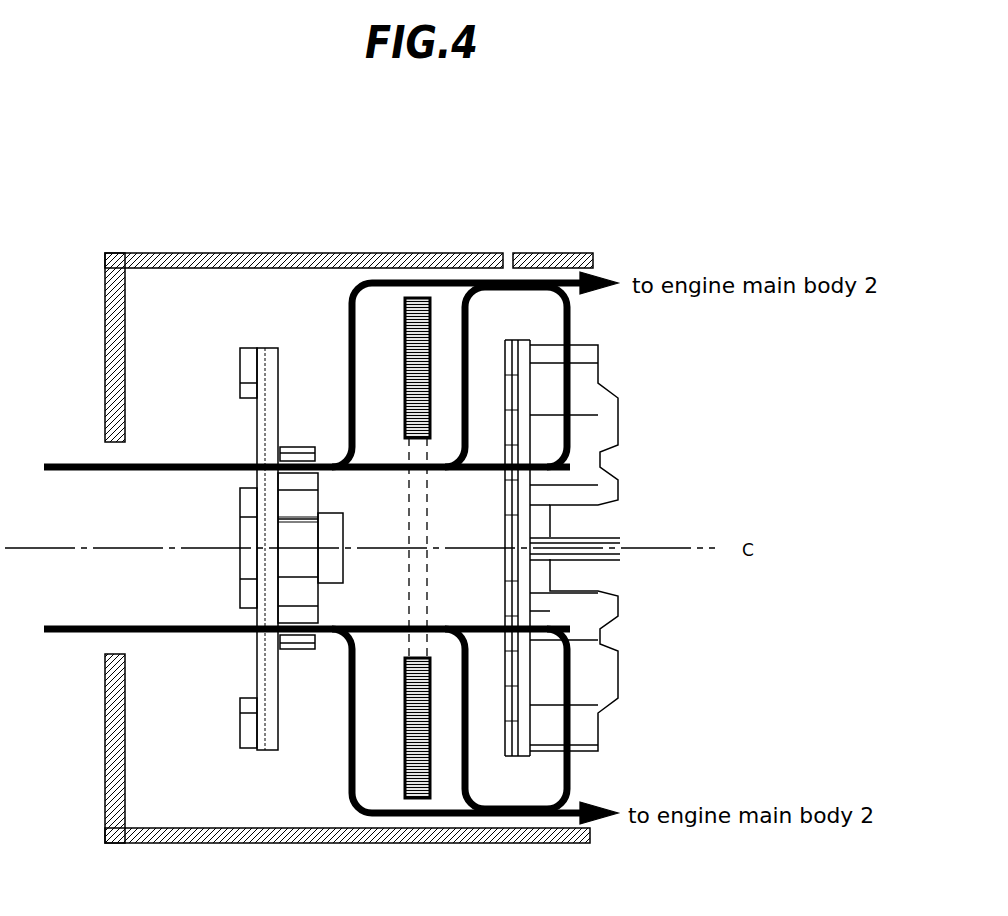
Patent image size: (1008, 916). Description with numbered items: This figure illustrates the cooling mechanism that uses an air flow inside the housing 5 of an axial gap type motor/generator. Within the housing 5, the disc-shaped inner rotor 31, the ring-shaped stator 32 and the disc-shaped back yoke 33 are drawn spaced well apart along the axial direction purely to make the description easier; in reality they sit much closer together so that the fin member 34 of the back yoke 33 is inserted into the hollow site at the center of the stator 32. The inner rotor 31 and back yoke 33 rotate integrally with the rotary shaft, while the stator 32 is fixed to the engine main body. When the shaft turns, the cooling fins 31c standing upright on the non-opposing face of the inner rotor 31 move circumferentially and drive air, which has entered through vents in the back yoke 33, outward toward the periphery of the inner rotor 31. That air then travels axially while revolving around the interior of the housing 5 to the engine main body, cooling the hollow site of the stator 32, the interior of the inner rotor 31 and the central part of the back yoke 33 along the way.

The housing 5 is at (162, 253).
The inner rotor 31 is at (611, 463).
The cooling fins 31c is at (585, 677).
The stator 32 is at (413, 296).
The back yoke 33 is at (263, 348).
The fin member 34 is at (302, 643).